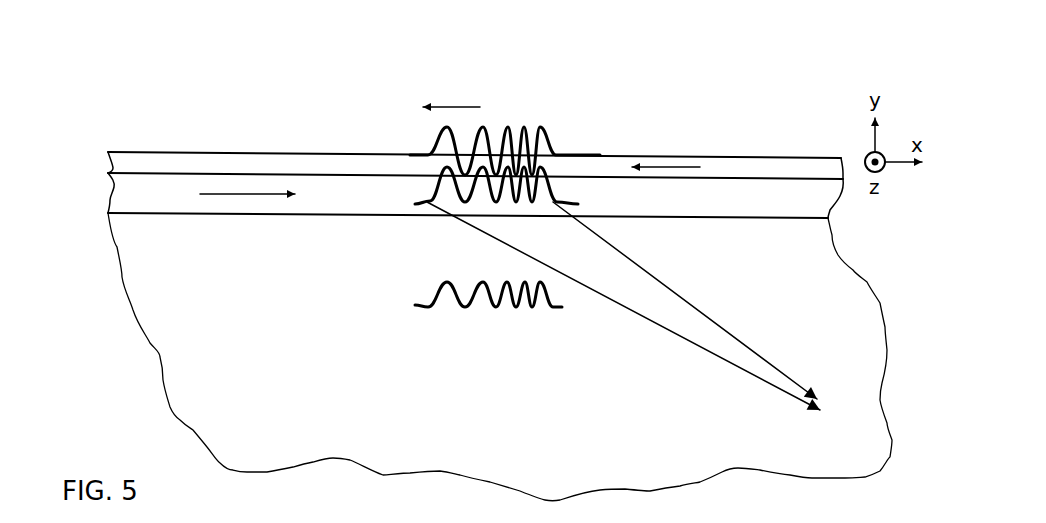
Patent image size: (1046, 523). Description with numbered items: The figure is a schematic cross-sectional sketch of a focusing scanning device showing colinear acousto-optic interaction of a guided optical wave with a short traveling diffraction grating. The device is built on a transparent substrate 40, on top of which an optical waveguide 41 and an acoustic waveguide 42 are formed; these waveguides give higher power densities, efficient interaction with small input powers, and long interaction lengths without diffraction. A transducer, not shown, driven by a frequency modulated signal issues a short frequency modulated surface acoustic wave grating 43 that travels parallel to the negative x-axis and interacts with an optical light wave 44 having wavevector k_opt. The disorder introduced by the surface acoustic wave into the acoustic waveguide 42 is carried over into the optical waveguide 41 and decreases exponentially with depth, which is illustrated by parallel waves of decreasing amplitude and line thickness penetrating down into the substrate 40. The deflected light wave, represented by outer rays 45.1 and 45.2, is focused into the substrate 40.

The transparent substrate 40 is at (500, 357).
The optical waveguide 41 is at (133, 188).
The acoustic waveguide 42 is at (118, 166).
The traveling diffraction grating 43 is at (540, 126).
The optical light wave 44 is at (238, 193).
The outer ray 45.1 is at (657, 325).
The outer ray 45.2 is at (703, 312).